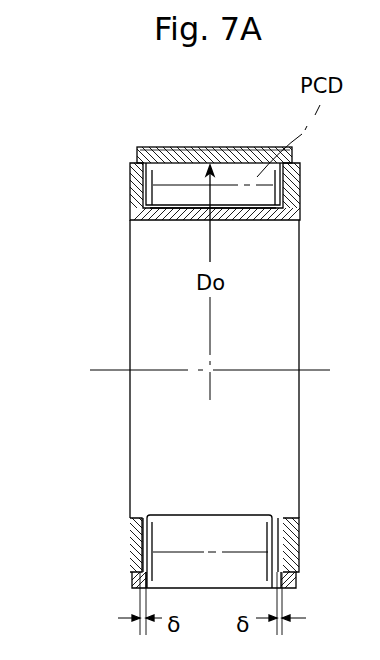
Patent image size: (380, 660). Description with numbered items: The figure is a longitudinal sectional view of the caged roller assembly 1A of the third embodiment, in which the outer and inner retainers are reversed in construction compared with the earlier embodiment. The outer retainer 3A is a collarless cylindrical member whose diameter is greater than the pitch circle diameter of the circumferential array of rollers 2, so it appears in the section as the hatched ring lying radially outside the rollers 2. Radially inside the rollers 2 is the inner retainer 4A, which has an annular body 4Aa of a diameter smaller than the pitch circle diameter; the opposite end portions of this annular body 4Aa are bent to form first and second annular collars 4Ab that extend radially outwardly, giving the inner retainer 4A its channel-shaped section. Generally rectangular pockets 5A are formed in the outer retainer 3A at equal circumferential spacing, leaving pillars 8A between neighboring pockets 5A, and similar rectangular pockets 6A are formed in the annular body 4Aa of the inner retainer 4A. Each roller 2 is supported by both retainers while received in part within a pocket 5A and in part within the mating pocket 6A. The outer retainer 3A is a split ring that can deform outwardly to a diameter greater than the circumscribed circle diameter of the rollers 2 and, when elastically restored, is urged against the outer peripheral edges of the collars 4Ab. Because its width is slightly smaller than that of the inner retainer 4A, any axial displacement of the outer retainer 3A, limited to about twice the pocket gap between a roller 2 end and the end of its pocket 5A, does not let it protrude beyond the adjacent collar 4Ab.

The caged roller assembly 1A is at (75, 131).
The roller 2 is at (233, 172).
The outer retainer 3A is at (137, 155).
The inner retainer 4A is at (165, 214).
The annular body 4Aa is at (263, 219).
The annular collar 4Ab is at (130, 193).
The pocket 5A is at (285, 578).
The pocket 6A is at (278, 522).
The pillar 8A is at (177, 147).